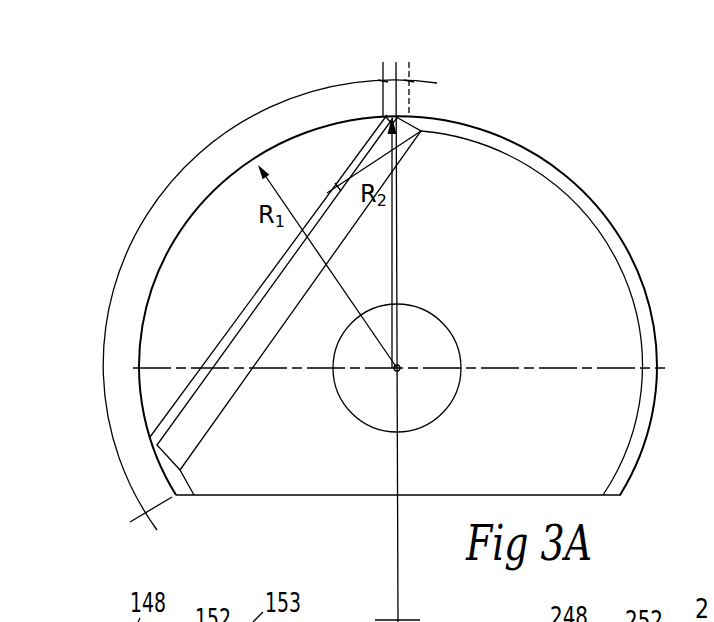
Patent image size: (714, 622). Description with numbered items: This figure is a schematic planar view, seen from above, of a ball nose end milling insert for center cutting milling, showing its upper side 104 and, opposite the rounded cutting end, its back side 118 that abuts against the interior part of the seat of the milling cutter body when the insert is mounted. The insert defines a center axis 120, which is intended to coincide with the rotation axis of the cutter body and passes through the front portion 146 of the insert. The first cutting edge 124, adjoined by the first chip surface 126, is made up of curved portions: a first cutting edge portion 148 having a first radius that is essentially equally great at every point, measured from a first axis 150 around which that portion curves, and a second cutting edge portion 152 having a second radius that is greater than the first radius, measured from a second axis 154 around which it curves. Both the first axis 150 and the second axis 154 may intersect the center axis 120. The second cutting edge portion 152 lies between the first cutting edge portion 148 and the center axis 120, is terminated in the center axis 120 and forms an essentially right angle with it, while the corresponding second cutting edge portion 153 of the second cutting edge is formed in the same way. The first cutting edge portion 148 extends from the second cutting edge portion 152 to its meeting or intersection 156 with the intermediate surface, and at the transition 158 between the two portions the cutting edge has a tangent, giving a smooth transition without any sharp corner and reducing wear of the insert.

The upper side 104 is at (572, 253).
The back side 118 is at (340, 497).
The center axis 120 is at (400, 211).
The first cutting edge 124 is at (150, 298).
The first chip surface 126 is at (172, 327).
The front portion 146 is at (458, 113).
The first cutting edge portion 148 is at (172, 247).
The first axis 150 is at (400, 366).
The second cutting edge portion 152 is at (392, 110).
The second cutting edge portion of the second cutting edge 153 is at (408, 112).
The second axis 154 is at (402, 618).
The meeting/intersection 156 is at (152, 438).
The transition 158 is at (382, 111).